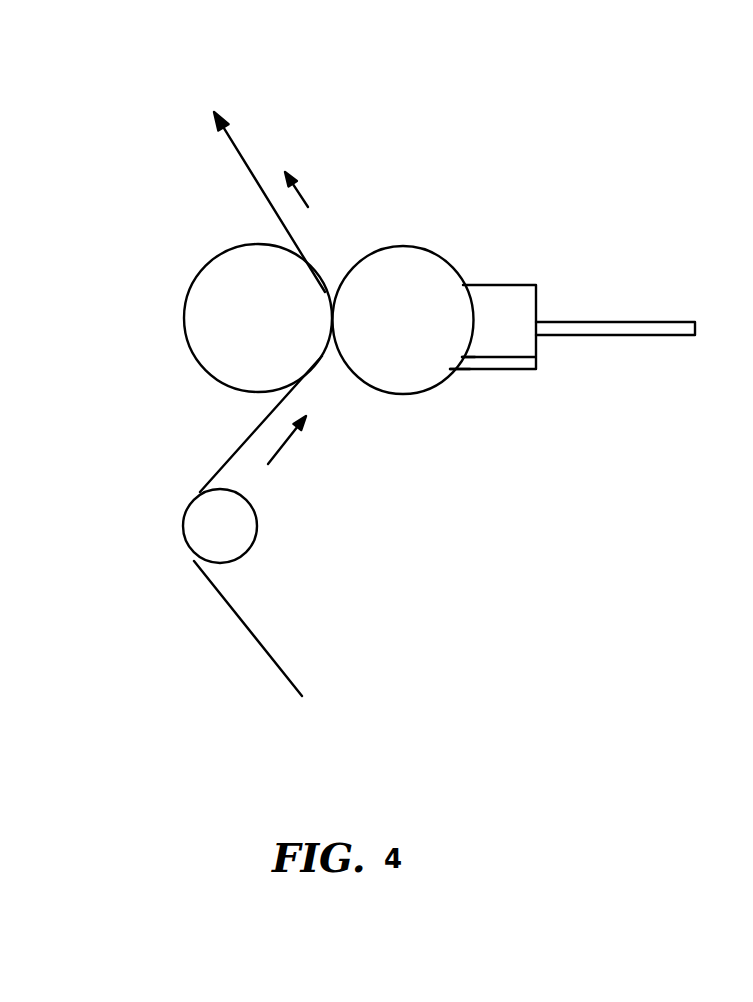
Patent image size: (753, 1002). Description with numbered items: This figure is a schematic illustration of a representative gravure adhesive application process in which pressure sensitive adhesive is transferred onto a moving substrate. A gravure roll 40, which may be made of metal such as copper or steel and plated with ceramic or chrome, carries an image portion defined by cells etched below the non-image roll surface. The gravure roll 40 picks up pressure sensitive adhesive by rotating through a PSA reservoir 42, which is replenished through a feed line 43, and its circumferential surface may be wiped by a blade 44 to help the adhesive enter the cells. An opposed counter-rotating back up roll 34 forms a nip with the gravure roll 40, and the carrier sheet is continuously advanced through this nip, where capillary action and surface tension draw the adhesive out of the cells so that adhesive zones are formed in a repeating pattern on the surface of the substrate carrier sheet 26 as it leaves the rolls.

The substrate carrier sheet 26 is at (222, 159).
The back up roll 34 is at (173, 368).
The gravure roll 40 is at (450, 246).
The PSA reservoir 42 is at (548, 296).
The feed line 43 is at (634, 348).
The blade 44 is at (474, 381).